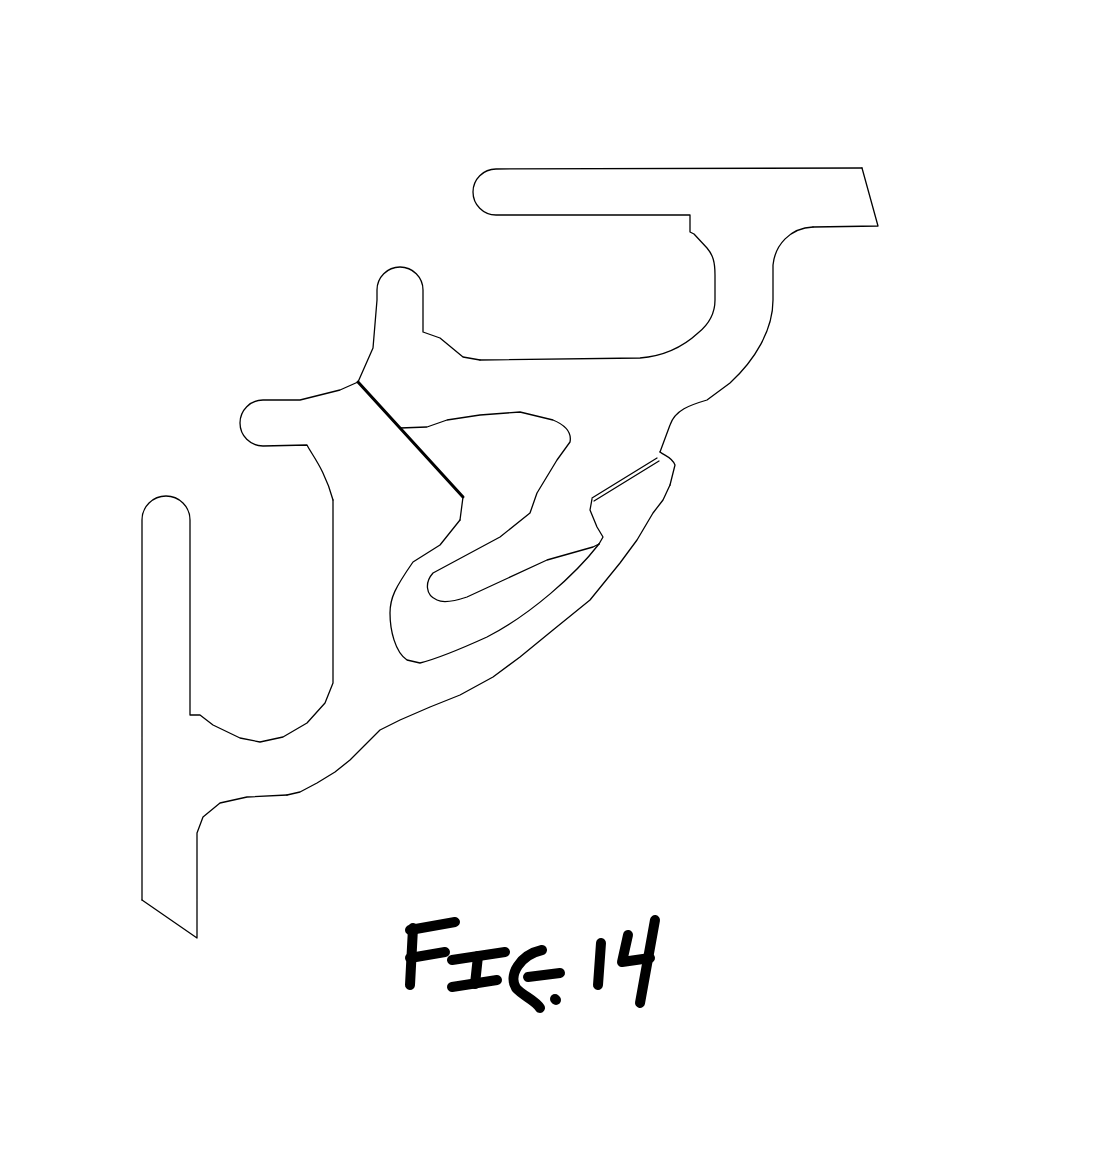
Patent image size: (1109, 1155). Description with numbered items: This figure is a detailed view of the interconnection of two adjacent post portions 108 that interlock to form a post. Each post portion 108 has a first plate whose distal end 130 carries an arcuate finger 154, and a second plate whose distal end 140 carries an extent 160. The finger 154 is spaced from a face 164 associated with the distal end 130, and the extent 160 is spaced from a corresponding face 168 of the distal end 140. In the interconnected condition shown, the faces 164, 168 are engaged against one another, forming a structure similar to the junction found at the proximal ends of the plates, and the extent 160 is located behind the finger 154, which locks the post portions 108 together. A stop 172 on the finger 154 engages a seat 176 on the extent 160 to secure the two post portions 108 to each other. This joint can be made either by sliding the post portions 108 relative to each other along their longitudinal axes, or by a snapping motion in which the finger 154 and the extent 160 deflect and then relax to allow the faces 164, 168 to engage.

The post portion 108 is at (845, 195).
The distal end of the first plate 130 is at (163, 518).
The distal end of the second plate 140 is at (498, 188).
The arcuate finger 154 is at (487, 277).
The extent 160 is at (473, 573).
The face 164 is at (447, 457).
The face 168 is at (382, 405).
The stop 172 is at (603, 517).
The seat 176 is at (590, 513).